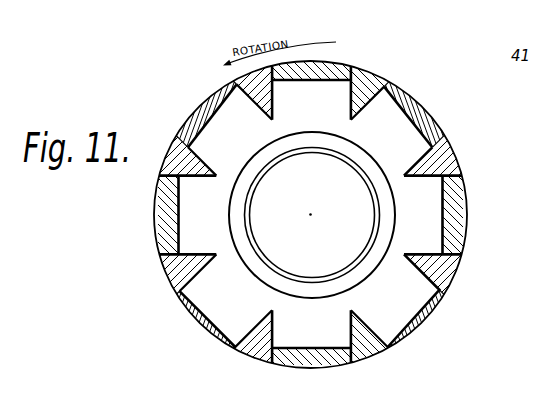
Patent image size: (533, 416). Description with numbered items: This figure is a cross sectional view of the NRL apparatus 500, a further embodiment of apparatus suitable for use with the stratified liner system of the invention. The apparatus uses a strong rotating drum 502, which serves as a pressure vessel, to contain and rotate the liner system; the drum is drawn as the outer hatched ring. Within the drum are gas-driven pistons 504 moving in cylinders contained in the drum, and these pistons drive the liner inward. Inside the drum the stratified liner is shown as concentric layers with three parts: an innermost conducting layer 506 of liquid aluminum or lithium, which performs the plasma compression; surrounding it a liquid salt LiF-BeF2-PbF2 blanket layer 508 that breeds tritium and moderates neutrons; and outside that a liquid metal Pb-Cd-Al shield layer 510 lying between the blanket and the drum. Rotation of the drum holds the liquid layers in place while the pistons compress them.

The NRL apparatus 500 is at (130, 223).
The rotating drum 502 is at (168, 273).
The gas-driven pistons 504 is at (467, 223).
The innermost conducting layer 506 is at (355, 265).
The blanket layer 508 is at (332, 290).
The shield layer 510 is at (313, 332).